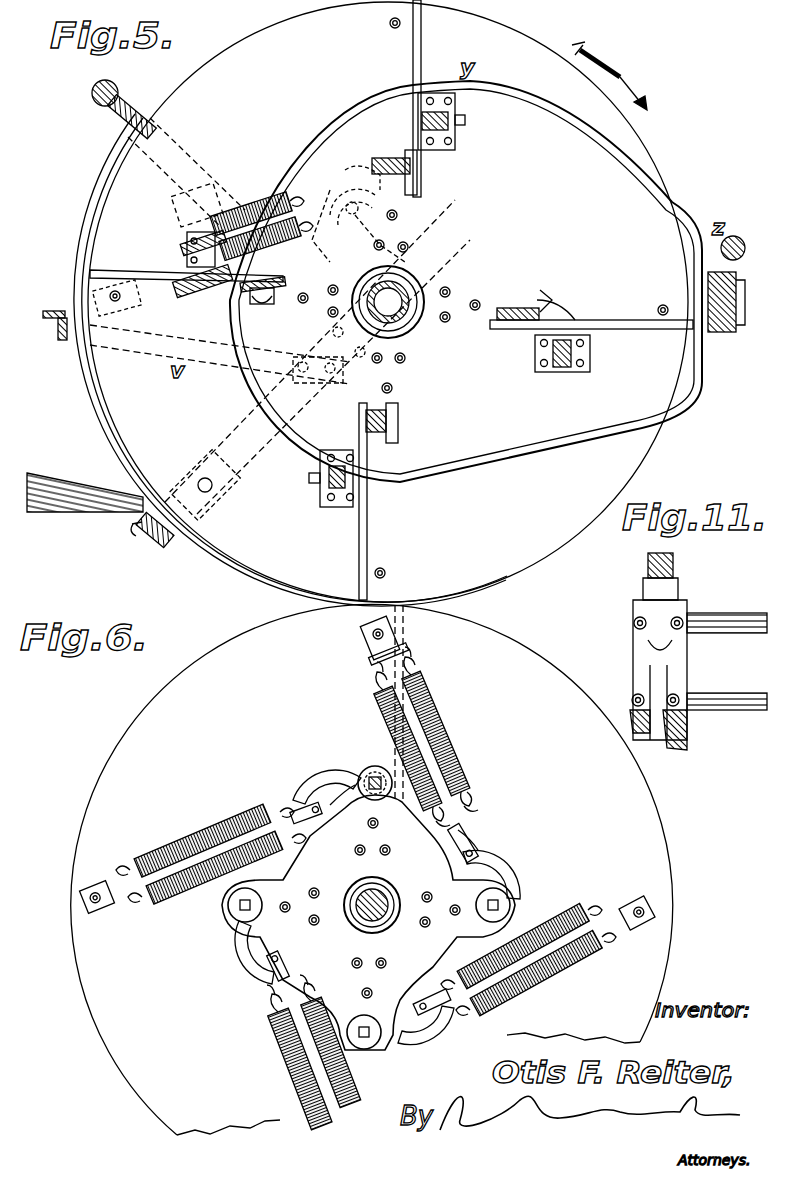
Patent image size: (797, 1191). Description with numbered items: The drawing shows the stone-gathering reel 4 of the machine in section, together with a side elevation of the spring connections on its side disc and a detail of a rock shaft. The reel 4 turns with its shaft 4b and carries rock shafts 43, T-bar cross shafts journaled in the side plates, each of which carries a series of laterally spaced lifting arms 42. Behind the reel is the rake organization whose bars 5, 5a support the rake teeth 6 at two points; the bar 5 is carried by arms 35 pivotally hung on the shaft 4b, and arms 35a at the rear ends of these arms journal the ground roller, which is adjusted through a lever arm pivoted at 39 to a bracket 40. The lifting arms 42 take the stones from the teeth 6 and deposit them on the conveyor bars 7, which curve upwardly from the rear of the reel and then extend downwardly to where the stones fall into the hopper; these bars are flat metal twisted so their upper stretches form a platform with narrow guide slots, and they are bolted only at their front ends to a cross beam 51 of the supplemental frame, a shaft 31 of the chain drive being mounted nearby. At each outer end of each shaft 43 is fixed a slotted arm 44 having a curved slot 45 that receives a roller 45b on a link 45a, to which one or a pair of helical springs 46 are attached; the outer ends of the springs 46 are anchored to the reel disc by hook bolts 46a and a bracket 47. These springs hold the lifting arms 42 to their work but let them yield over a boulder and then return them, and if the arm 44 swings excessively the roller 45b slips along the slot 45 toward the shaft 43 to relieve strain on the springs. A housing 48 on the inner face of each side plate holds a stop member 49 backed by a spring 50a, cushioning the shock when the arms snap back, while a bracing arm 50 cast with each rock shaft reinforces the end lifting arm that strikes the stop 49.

In FIG. 5, the reel 4 is at (620, 132).
In FIG. 6, the reel 4 is at (135, 769).
In FIG. 5, the shaft 4b is at (410, 322).
In FIG. 6, the shaft 4b is at (360, 915).
In FIG. 5, the bar 5 is at (148, 540).
In FIG. 5, the bar 5a is at (55, 309).
In FIG. 5, the rake teeth 6 is at (230, 568).
In FIG. 5, the conveyor bars 7 is at (302, 140).
In FIG. 5, the shaft 31 is at (736, 242).
In FIG. 5, the arms 35 is at (250, 428).
In FIG. 5, the arms 35a is at (90, 495).
In FIG. 5, the pivot 39 is at (93, 102).
In FIG. 5, the bracket 40 is at (148, 112).
In FIG. 5, the lifting arms 42 is at (420, 63).
In FIG. 6, the lifting arms 42 is at (405, 627).
In FIG. 11, the lifting arms 42 is at (748, 613).
In FIG. 5, the rock shafts 43 is at (355, 172).
In FIG. 11, the rock shafts 43 is at (688, 748).
In FIG. 5, the arm 44 is at (345, 183).
In FIG. 6, the arm 44 is at (330, 775).
In FIG. 5, the curved slot 45 is at (420, 206).
In FIG. 6, the curved slot 45 is at (315, 795).
In FIG. 5, the link 45a is at (350, 254).
In FIG. 6, the link 45a is at (480, 826).
In FIG. 6, the roller 45b is at (460, 862).
In FIG. 5, the helical springs 46 is at (258, 205).
In FIG. 6, the helical springs 46 is at (190, 848).
In FIG. 6, the hook bolts 46a is at (380, 680).
In FIG. 5, the bracket 47 is at (112, 318).
In FIG. 6, the bracket 47 is at (362, 640).
In FIG. 5, the housing 48 is at (437, 150).
In FIG. 5, the stop member 49 is at (458, 110).
In FIG. 5, the bracing arm 50 is at (385, 148).
In FIG. 6, the bracing arm 50 is at (372, 770).
In FIG. 11, the bracing arm 50 is at (712, 625).
In FIG. 5, the spring 50a is at (535, 362).
In FIG. 5, the cross beam 51 is at (741, 300).